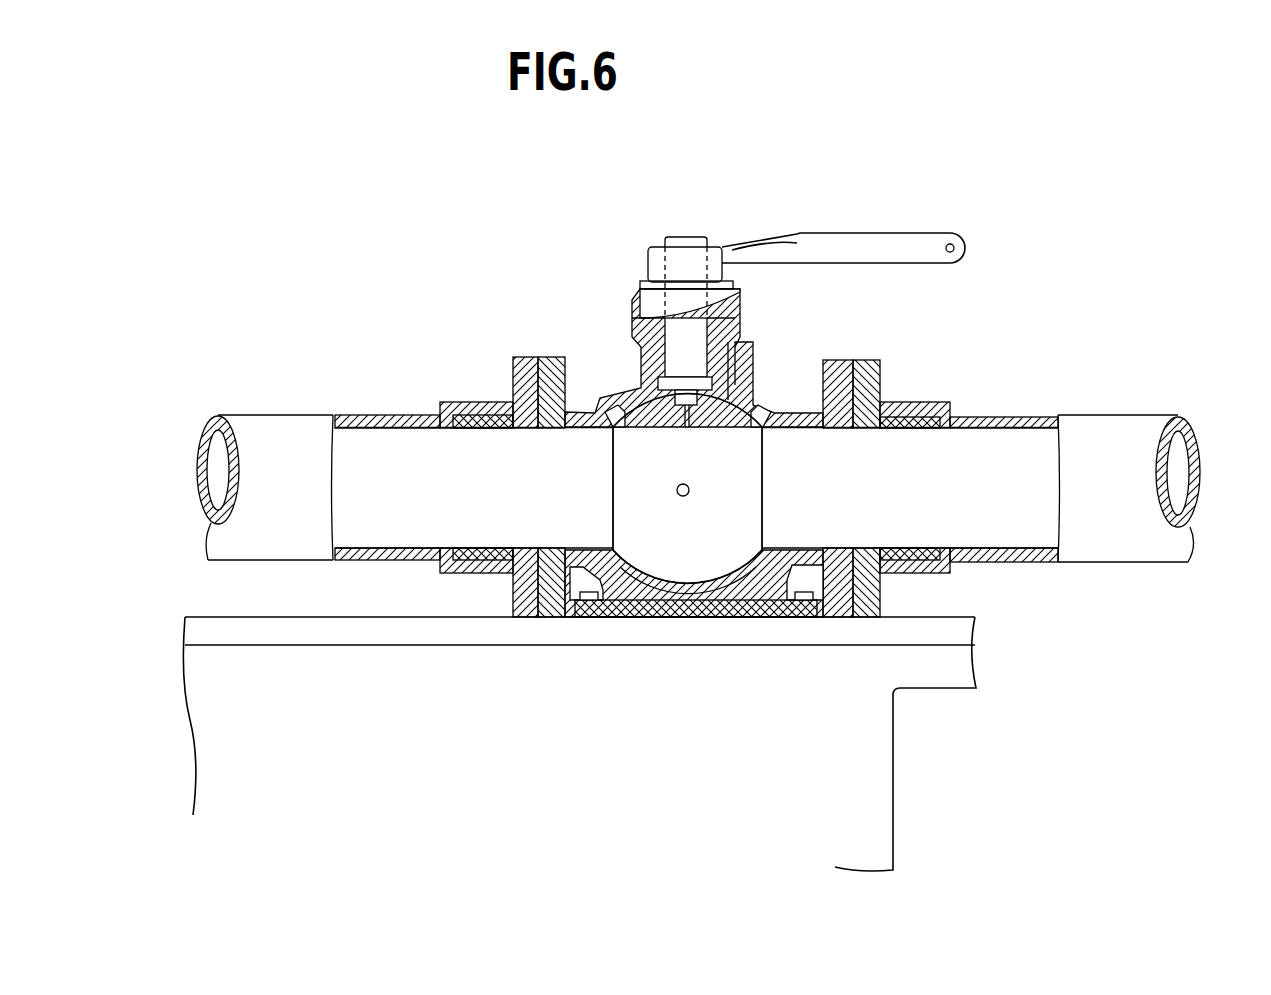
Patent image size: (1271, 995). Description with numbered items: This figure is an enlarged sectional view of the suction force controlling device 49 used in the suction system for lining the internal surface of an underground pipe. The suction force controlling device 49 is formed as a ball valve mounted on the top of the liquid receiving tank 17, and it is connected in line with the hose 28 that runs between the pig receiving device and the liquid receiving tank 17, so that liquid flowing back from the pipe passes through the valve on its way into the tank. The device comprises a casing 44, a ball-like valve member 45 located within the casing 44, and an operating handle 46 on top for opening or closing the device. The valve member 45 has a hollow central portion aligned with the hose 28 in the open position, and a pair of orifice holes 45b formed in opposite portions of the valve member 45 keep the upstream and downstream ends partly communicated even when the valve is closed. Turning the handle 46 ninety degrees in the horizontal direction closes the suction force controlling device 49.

The liquid receiving tank 17 is at (867, 755).
The hose 28 is at (315, 545).
The casing 44 is at (600, 573).
The ball-like valve member 45 is at (714, 491).
The orifice hole 45b is at (683, 484).
The operating handle 46 is at (838, 235).
The suction force controlling device 49 is at (696, 411).